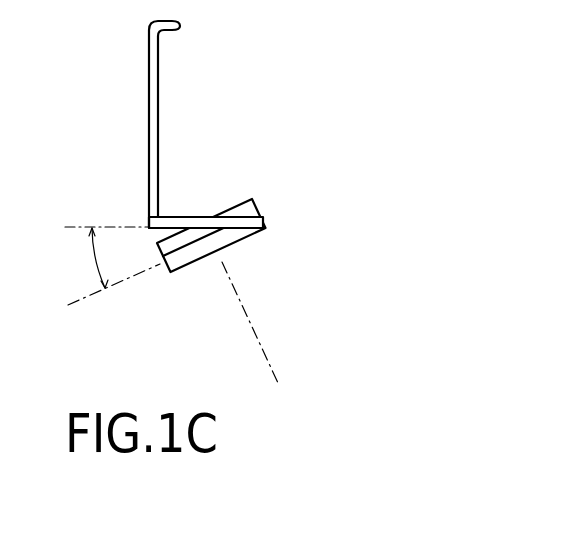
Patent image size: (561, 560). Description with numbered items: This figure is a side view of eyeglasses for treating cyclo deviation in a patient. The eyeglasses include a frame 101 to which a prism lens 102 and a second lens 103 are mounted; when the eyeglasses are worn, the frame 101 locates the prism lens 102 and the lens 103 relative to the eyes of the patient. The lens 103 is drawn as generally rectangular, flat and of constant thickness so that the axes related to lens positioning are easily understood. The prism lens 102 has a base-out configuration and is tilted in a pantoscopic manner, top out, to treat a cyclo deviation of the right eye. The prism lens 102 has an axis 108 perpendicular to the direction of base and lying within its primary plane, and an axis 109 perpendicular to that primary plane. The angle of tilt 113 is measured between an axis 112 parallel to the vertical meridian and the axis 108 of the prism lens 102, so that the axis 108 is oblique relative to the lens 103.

The frame 101 is at (158, 83).
The prism lens 102 is at (264, 228).
The lens 103 is at (170, 217).
The axis 108 is at (87, 295).
The axis 109 is at (262, 350).
The axis 112 is at (72, 227).
The angle of tilt 113 is at (97, 262).